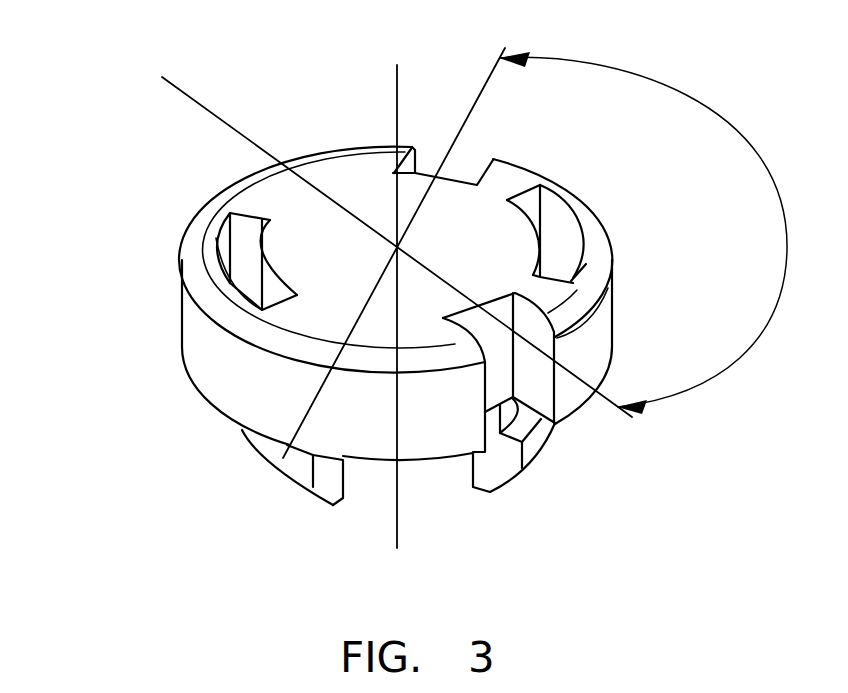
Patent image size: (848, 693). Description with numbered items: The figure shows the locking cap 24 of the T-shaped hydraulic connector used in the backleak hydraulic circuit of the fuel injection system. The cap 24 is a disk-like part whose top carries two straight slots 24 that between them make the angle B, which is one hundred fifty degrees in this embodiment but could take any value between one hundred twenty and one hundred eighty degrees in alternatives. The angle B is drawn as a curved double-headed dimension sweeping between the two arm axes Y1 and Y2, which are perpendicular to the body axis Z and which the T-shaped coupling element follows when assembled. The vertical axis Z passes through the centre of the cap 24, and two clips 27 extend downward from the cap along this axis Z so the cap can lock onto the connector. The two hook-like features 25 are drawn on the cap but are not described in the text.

The locking cap 24 is at (140, 211).
The hook tabs 25 is at (428, 162).
The clips 27 is at (300, 473).
The vertical axis Z is at (396, 292).
The arm axis Y1 is at (304, 425).
The arm axis Y2 is at (202, 106).
The angle B is at (655, 233).